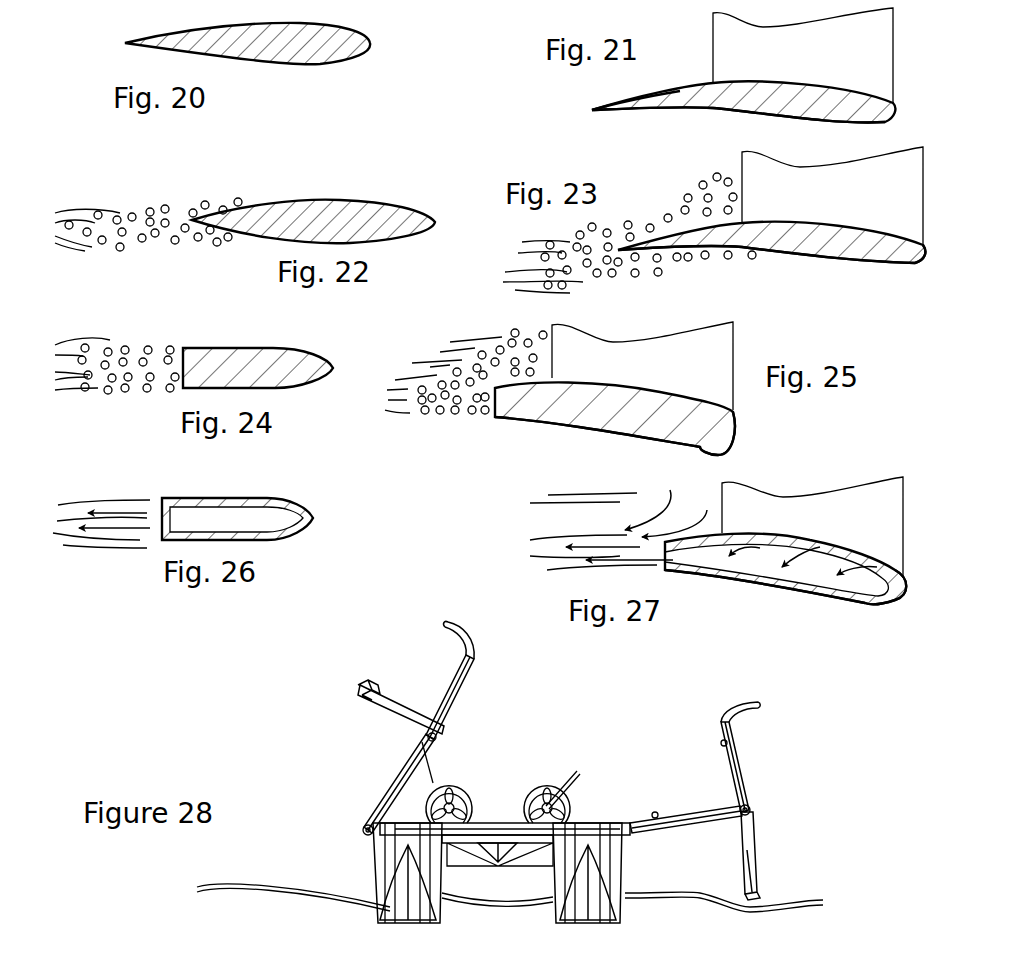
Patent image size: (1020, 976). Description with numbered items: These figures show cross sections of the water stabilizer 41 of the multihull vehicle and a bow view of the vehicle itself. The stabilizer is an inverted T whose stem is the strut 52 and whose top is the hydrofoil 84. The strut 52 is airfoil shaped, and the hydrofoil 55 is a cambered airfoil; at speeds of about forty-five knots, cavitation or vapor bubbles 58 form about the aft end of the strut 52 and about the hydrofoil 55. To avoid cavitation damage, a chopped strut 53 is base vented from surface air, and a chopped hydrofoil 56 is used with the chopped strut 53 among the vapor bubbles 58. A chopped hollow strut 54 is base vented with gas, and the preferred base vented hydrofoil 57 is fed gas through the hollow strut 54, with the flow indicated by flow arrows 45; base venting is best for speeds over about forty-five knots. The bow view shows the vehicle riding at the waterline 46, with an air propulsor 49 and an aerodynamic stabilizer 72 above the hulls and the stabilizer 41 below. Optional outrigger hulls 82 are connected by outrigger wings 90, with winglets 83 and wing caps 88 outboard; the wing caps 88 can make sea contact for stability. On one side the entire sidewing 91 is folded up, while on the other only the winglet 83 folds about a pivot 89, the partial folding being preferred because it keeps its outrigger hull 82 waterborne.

In FIG. 20, the water stabilizer 41 is at (330, 63).
In FIG. 21, the water stabilizer 41 is at (763, 66).
In FIG. 22, the water stabilizer 41 is at (313, 203).
In FIG. 23, the water stabilizer 41 is at (795, 212).
In FIG. 24, the water stabilizer 41 is at (233, 348).
In FIG. 25, the water stabilizer 41 is at (607, 376).
In FIG. 26, the water stabilizer 41 is at (213, 505).
In FIG. 27, the water stabilizer 41 is at (768, 526).
In FIG. 28, the water stabilizer 41 is at (494, 862).
In FIG. 20, the strut 52 is at (362, 44).
In FIG. 21, the strut 52 is at (840, 63).
In FIG. 22, the strut 52 is at (377, 203).
In FIG. 23, the strut 52 is at (858, 210).
In FIG. 24, the chopped strut 53 is at (262, 347).
In FIG. 25, the chopped strut 53 is at (710, 372).
In FIG. 26, the chopped hollow strut 54 is at (243, 506).
In FIG. 27, the chopped hollow strut 54 is at (888, 533).
In FIG. 21, the hydrofoil 55 is at (623, 101).
In FIG. 23, the hydrofoil 55 is at (917, 266).
In FIG. 25, the chopped hydrofoil 56 is at (721, 457).
In FIG. 27, the base vented hydrofoil 57 is at (867, 605).
In FIG. 22, the cavitation or vapor bubbles 58 is at (150, 208).
In FIG. 23, the cavitation or vapor bubbles 58 is at (662, 274).
In FIG. 24, the cavitation or vapor bubbles 58 is at (128, 346).
In FIG. 25, the cavitation or vapor bubbles 58 is at (473, 414).
In FIG. 26, the air flow arrows 45 is at (117, 511).
In FIG. 27, the air flow arrows 45 is at (655, 518).
In FIG. 21, the hydrofoil 84 is at (683, 109).
In FIG. 23, the hydrofoil 84 is at (867, 259).
In FIG. 25, the hydrofoil 84 is at (563, 421).
In FIG. 27, the hydrofoil 84 is at (770, 576).
In FIG. 28, the waterline 46 is at (665, 898).
In FIG. 28, the air propulsor 49 is at (537, 791).
In FIG. 28, the aerodynamic stabilizer 72 is at (579, 776).
In FIG. 28, the outrigger hull 82 is at (359, 707).
In FIG. 28, the winglet 83 is at (457, 680).
In FIG. 28, the wing cap 88 is at (450, 638).
In FIG. 28, the pivot 89 is at (363, 833).
In FIG. 28, the outrigger wing 90 is at (400, 772).
In FIG. 28, the sidewing 91 is at (443, 733).